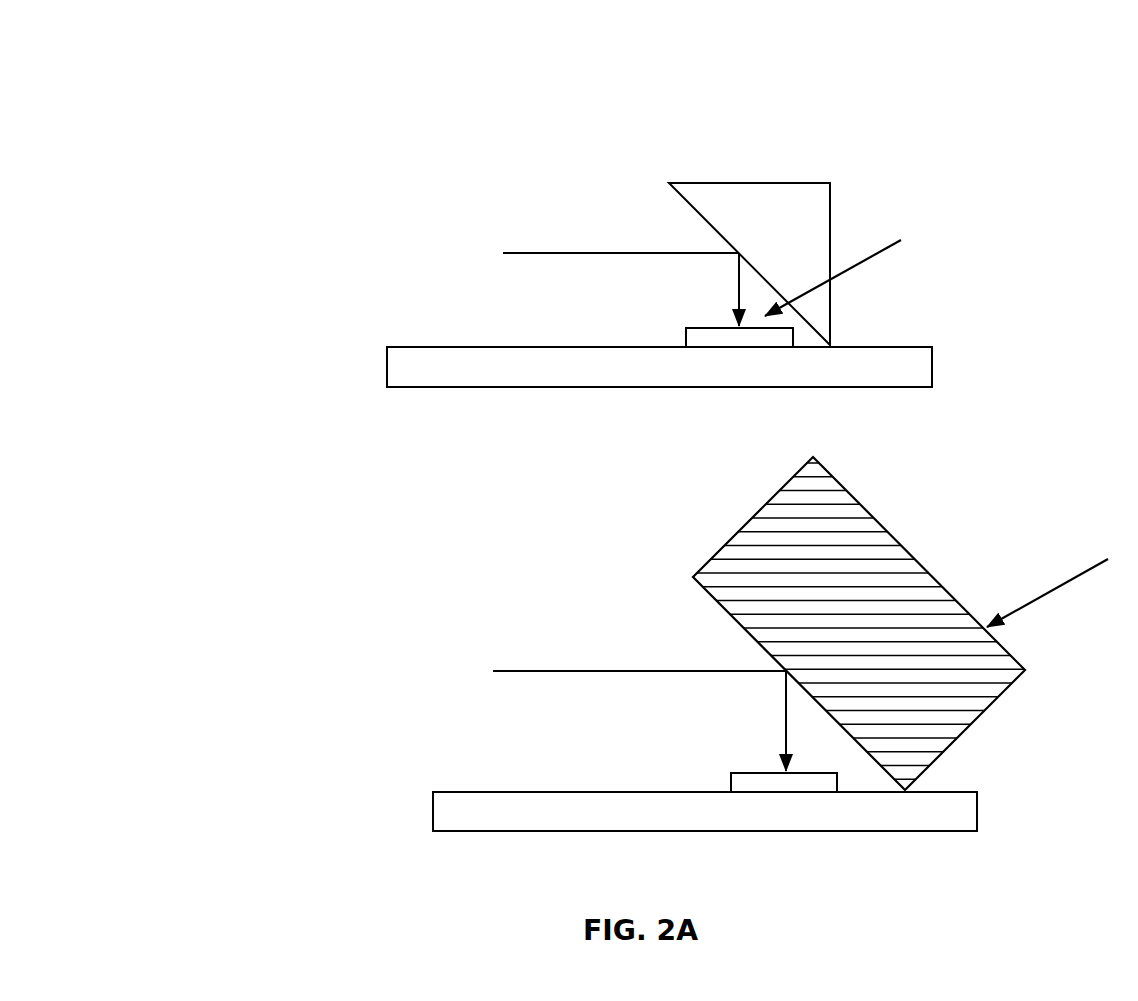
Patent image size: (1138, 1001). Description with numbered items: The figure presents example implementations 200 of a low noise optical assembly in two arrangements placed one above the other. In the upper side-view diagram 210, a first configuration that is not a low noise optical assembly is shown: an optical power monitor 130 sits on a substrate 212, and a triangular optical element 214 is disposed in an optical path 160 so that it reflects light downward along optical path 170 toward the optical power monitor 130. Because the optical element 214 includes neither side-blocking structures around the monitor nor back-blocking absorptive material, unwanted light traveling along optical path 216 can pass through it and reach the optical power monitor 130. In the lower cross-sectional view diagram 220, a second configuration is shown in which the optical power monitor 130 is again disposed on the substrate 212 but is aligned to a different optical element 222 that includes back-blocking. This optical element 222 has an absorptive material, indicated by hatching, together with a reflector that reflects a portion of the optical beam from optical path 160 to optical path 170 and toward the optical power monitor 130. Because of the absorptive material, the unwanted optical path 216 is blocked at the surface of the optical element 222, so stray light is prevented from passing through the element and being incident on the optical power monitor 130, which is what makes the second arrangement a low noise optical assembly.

The example implementations of a low noise optical assembly 200 is at (153, 47).
The side-view diagram 210 is at (430, 167).
The cross-sectional view diagram 220 is at (447, 539).
The substrate 212 is at (932, 367).
The optical power monitor 130 is at (702, 327).
The optical element 214 is at (760, 183).
The optical element 222 is at (1007, 648).
The optical path 160 is at (639, 449).
The optical path 170 is at (742, 512).
The optical path 216 is at (936, 433).